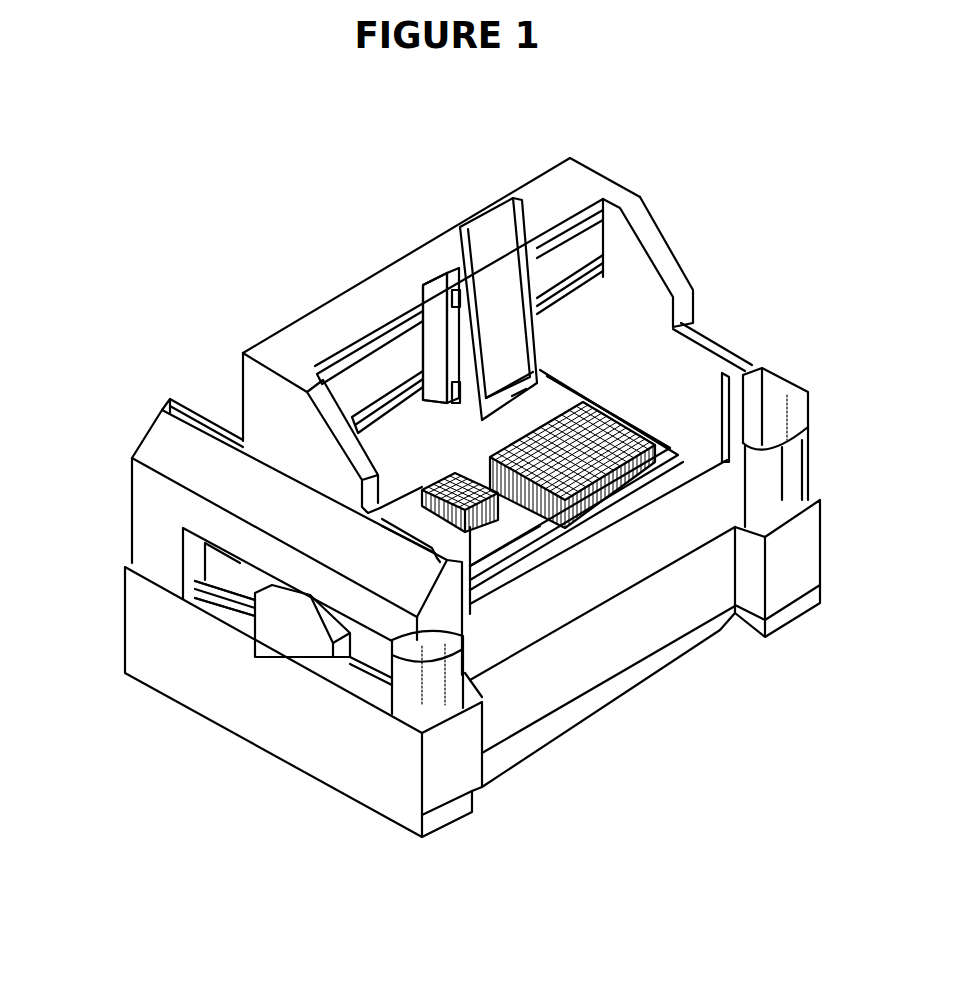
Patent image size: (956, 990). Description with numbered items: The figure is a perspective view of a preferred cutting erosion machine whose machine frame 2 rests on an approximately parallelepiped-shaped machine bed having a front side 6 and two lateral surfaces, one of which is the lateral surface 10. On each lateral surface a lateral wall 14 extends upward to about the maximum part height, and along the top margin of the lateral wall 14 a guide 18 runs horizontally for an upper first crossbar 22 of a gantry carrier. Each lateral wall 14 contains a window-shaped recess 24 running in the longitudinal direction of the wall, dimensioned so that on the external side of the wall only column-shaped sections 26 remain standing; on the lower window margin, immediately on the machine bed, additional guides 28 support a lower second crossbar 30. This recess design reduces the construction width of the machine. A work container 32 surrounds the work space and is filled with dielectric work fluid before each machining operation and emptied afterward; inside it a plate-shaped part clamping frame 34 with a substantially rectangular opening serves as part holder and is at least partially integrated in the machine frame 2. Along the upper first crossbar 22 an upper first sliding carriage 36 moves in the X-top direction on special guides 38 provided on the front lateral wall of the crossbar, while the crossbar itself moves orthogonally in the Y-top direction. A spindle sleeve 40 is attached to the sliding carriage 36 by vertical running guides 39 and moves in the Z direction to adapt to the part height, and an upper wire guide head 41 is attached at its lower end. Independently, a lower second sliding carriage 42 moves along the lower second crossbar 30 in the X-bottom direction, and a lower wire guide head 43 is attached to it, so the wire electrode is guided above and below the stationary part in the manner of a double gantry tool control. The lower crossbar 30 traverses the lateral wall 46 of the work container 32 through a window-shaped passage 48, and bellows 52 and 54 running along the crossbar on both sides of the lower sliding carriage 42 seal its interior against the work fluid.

The machine frame 2 is at (301, 214).
The front side 6 is at (597, 647).
The lateral surface 10 is at (244, 695).
The lateral wall 14 is at (140, 500).
The guide 18 is at (170, 398).
The upper first crossbar 22 is at (468, 335).
The window-shaped recess 24 is at (193, 597).
The column-shaped section 26 is at (143, 558).
The additional guide 28 is at (227, 607).
The lower second crossbar 30 is at (302, 621).
The work container 32 is at (598, 532).
The part clamping frame 34 is at (645, 417).
The upper first sliding carriage 36 is at (438, 297).
The guides 38 is at (375, 400).
The vertical running guides 39 is at (452, 328).
The spindle sleeve 40 is at (498, 309).
The upper wire guide head 41 is at (520, 394).
The lower second sliding carriage 42 is at (520, 528).
The lower wire guide head 43 is at (592, 480).
The lateral wall of the work container 46 is at (531, 462).
The window-shaped passage 48 is at (193, 579).
The bellows 52 is at (487, 553).
The bellows 54 is at (612, 482).